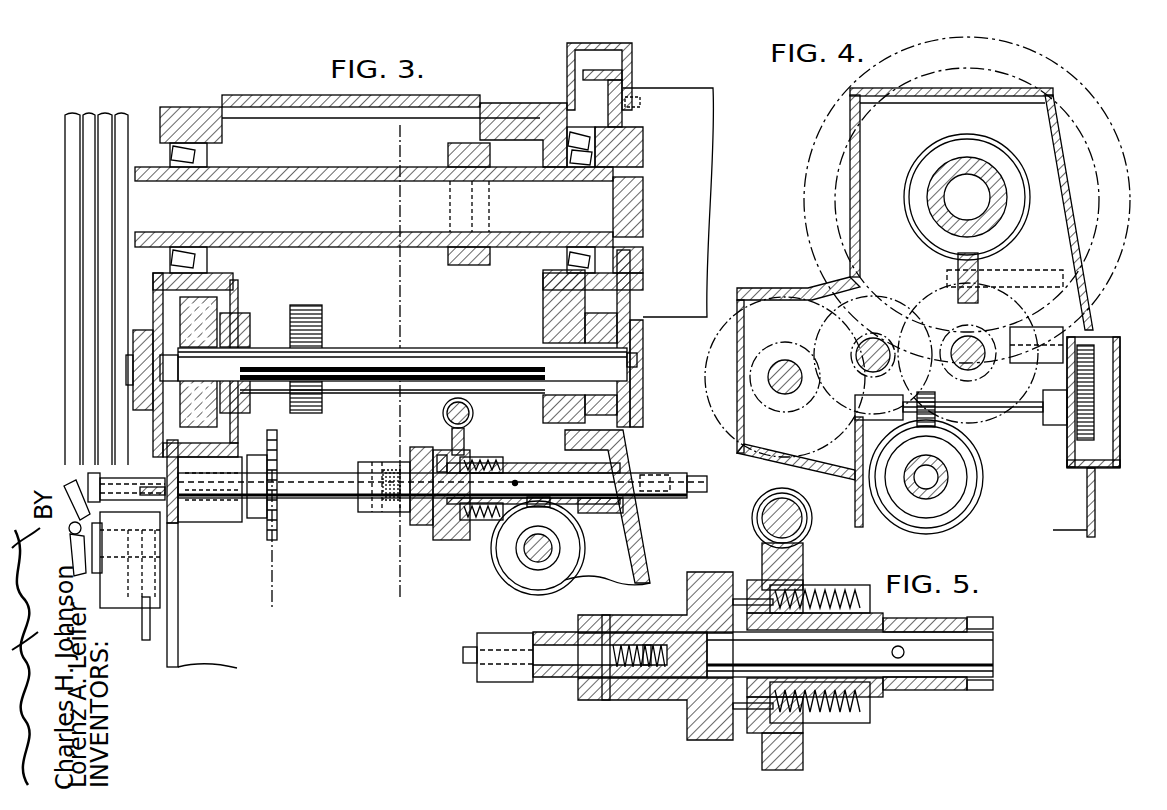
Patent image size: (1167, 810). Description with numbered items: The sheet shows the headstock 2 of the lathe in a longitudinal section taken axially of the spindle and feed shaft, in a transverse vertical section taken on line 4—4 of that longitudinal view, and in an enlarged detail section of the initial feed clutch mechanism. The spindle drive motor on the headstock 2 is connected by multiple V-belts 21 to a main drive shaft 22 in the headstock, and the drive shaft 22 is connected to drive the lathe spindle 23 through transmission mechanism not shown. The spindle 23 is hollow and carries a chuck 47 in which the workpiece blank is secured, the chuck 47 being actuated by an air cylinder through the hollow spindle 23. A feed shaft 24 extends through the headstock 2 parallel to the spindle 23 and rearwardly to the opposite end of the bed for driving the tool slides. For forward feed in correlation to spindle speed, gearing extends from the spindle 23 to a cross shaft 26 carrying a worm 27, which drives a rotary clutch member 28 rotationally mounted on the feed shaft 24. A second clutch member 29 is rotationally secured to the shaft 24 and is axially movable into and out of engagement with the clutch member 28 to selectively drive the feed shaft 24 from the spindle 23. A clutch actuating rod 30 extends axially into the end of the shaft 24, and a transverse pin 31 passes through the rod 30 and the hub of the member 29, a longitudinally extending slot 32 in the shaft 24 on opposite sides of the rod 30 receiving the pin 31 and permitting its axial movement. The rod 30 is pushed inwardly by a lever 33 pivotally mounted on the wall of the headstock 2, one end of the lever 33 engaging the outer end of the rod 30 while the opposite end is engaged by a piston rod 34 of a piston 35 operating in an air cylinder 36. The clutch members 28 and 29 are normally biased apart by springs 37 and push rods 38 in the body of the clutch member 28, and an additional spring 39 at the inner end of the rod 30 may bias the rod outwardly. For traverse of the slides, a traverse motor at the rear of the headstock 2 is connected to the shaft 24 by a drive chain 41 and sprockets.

In FIG. 3, the headstock 2 is at (518, 103).
In FIG. 4, the headstock 2 is at (848, 150).
In FIG. 3, the section line 4— 4 is at (393, 148).
In FIG. 3, the multiple V-belts 21 is at (68, 229).
In FIG. 3, the main drive shaft 22 is at (366, 396).
In FIG. 4, the main drive shaft 22 is at (784, 368).
In FIG. 3, the lathe spindle 23 is at (343, 164).
In FIG. 4, the lathe spindle 23 is at (932, 176).
In FIG. 3, the feed shaft 24 is at (318, 470).
In FIG. 4, the feed shaft 24 is at (940, 472).
In FIG. 5, the feed shaft 24 is at (980, 650).
In FIG. 3, the cross shaft 26 is at (443, 411).
In FIG. 4, the cross shaft 26 is at (1003, 402).
In FIG. 5, the cross shaft 26 is at (760, 522).
In FIG. 3, the worm 27 is at (479, 416).
In FIG. 4, the worm 27 is at (928, 387).
In FIG. 5, the worm 27 is at (810, 522).
In FIG. 3, the rotary clutch member 28 is at (446, 536).
In FIG. 4, the rotary clutch member 28 is at (984, 478).
In FIG. 5, the rotary clutch member 28 is at (763, 566).
In FIG. 3, the second clutch member 29 is at (416, 522).
In FIG. 4, the second clutch member 29 is at (955, 495).
In FIG. 5, the second clutch member 29 is at (702, 574).
In FIG. 3, the clutch actuating rod 30 is at (88, 477).
In FIG. 5, the clutch actuating rod 30 is at (463, 650).
In FIG. 3, the transverse pin 31 is at (372, 462).
In FIG. 5, the transverse pin 31 is at (605, 702).
In FIG. 5, the longitudinally extending slot 32 is at (640, 680).
In FIG. 3, the lever 33 is at (62, 486).
In FIG. 3, the piston rod 34 is at (92, 577).
In FIG. 3, the piston 35 is at (134, 540).
In FIG. 3, the air cylinder 36 is at (125, 608).
In FIG. 3, the springs 37 is at (490, 457).
In FIG. 5, the springs 37 is at (850, 592).
In FIG. 3, the push rods 38 is at (447, 455).
In FIG. 5, the push rods 38 is at (790, 600).
In FIG. 3, the additional spring 39 is at (392, 470).
In FIG. 5, the additional spring 39 is at (646, 645).
In FIG. 3, the drive chain 41 is at (268, 584).
In FIG. 3, the chuck 47 is at (685, 88).